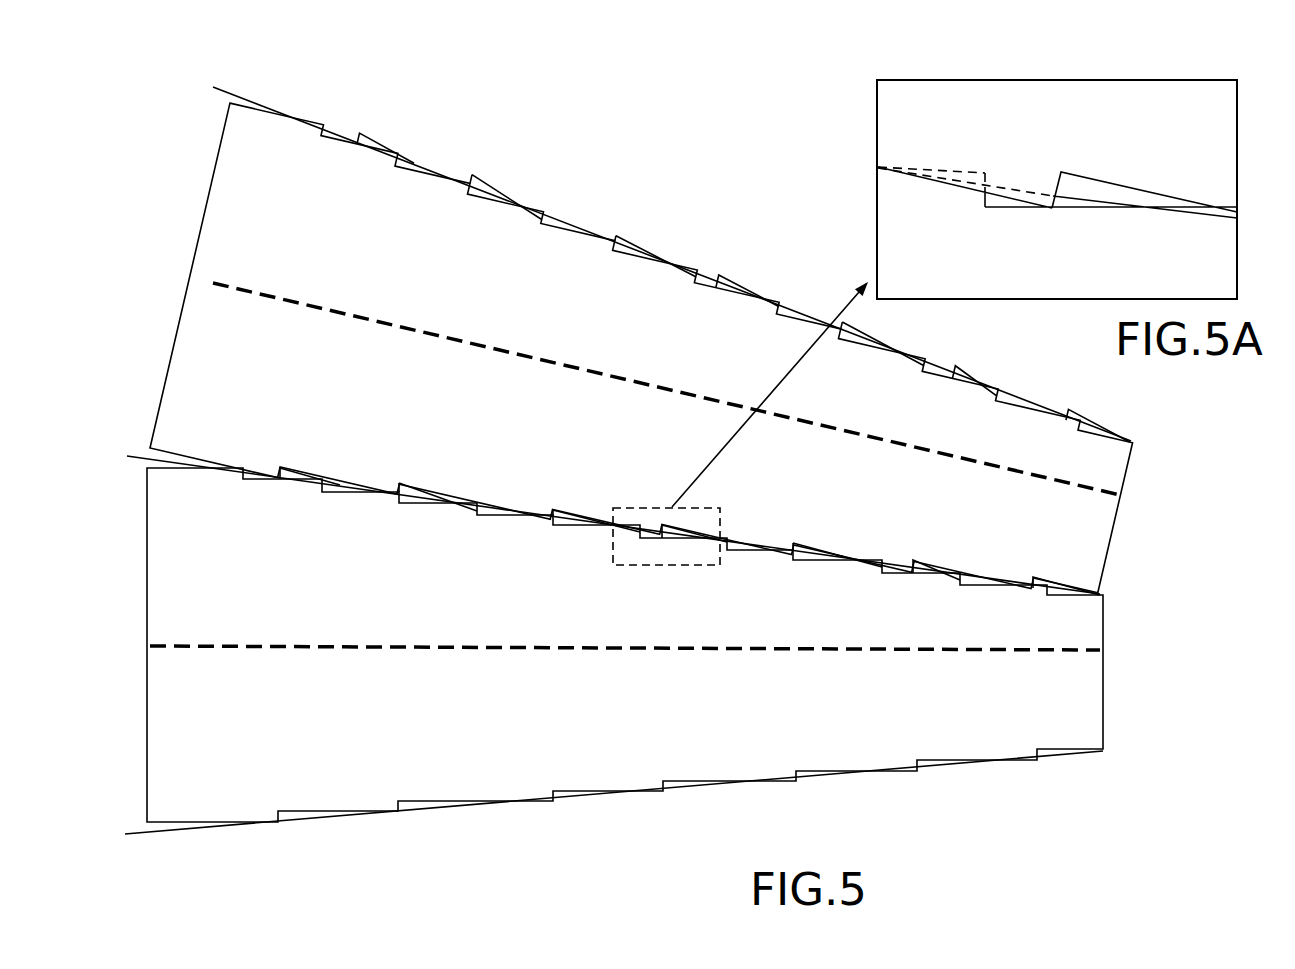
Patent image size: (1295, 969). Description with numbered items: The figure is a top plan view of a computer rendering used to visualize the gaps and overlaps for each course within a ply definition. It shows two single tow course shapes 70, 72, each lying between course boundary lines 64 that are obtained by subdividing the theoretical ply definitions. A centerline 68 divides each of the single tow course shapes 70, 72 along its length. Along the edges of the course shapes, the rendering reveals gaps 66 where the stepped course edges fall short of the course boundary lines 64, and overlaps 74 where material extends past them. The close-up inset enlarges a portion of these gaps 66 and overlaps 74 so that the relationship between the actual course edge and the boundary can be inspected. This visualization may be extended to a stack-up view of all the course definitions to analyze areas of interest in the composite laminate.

In FIG. 5, the course boundary line 64 is at (258, 99).
In FIG. 5, the gap 66 is at (553, 213).
In FIG. 5A, the gap 66 is at (1078, 186).
In FIG. 5, the centerline 68 is at (212, 283).
In FIG. 5, the single tow course shape 70 is at (352, 790).
In FIG. 5, the single tow course shape 72 is at (332, 167).
In FIG. 5A, the overlap 74 is at (980, 172).